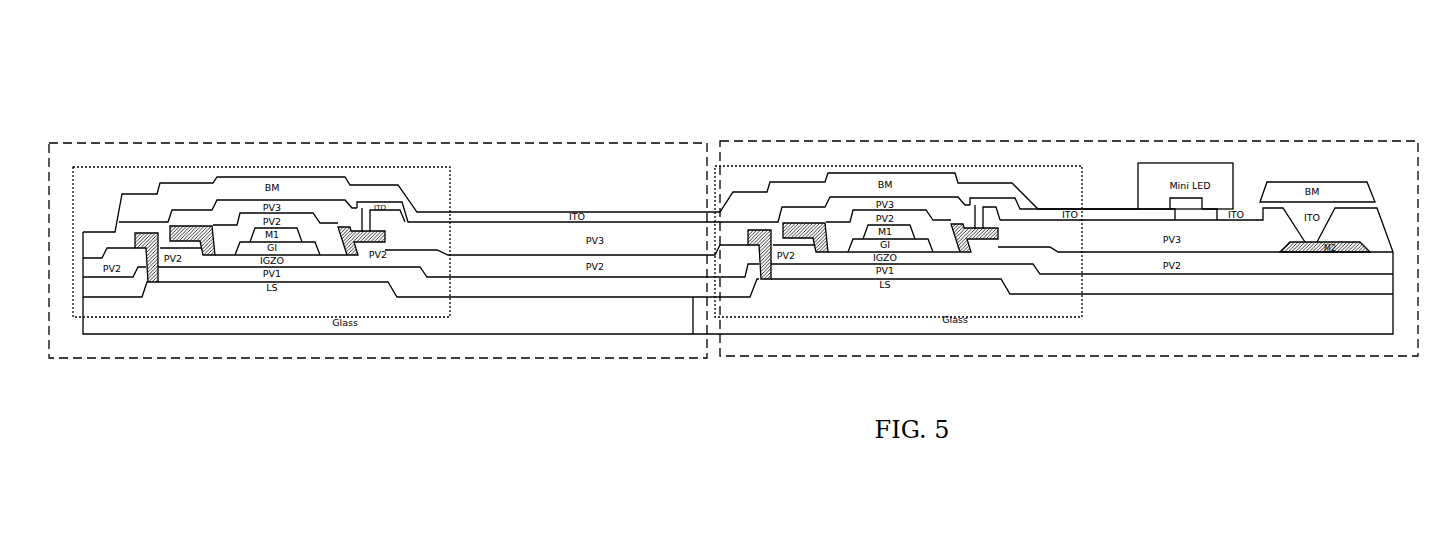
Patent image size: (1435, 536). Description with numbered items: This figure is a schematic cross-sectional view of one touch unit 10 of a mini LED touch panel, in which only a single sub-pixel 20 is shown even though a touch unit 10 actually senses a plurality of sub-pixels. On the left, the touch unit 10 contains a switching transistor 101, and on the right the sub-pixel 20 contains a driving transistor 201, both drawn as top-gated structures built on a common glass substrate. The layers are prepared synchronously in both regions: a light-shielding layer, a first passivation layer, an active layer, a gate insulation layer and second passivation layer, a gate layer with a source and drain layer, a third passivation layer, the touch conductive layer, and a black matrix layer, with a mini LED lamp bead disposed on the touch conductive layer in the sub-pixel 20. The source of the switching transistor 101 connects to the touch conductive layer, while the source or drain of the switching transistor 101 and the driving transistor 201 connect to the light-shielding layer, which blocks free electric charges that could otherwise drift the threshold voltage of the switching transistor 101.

The touch unit 10 is at (122, 121).
The switching transistor 101 is at (285, 167).
The sub-pixel 20 is at (1237, 105).
The driving transistor 201 is at (913, 166).